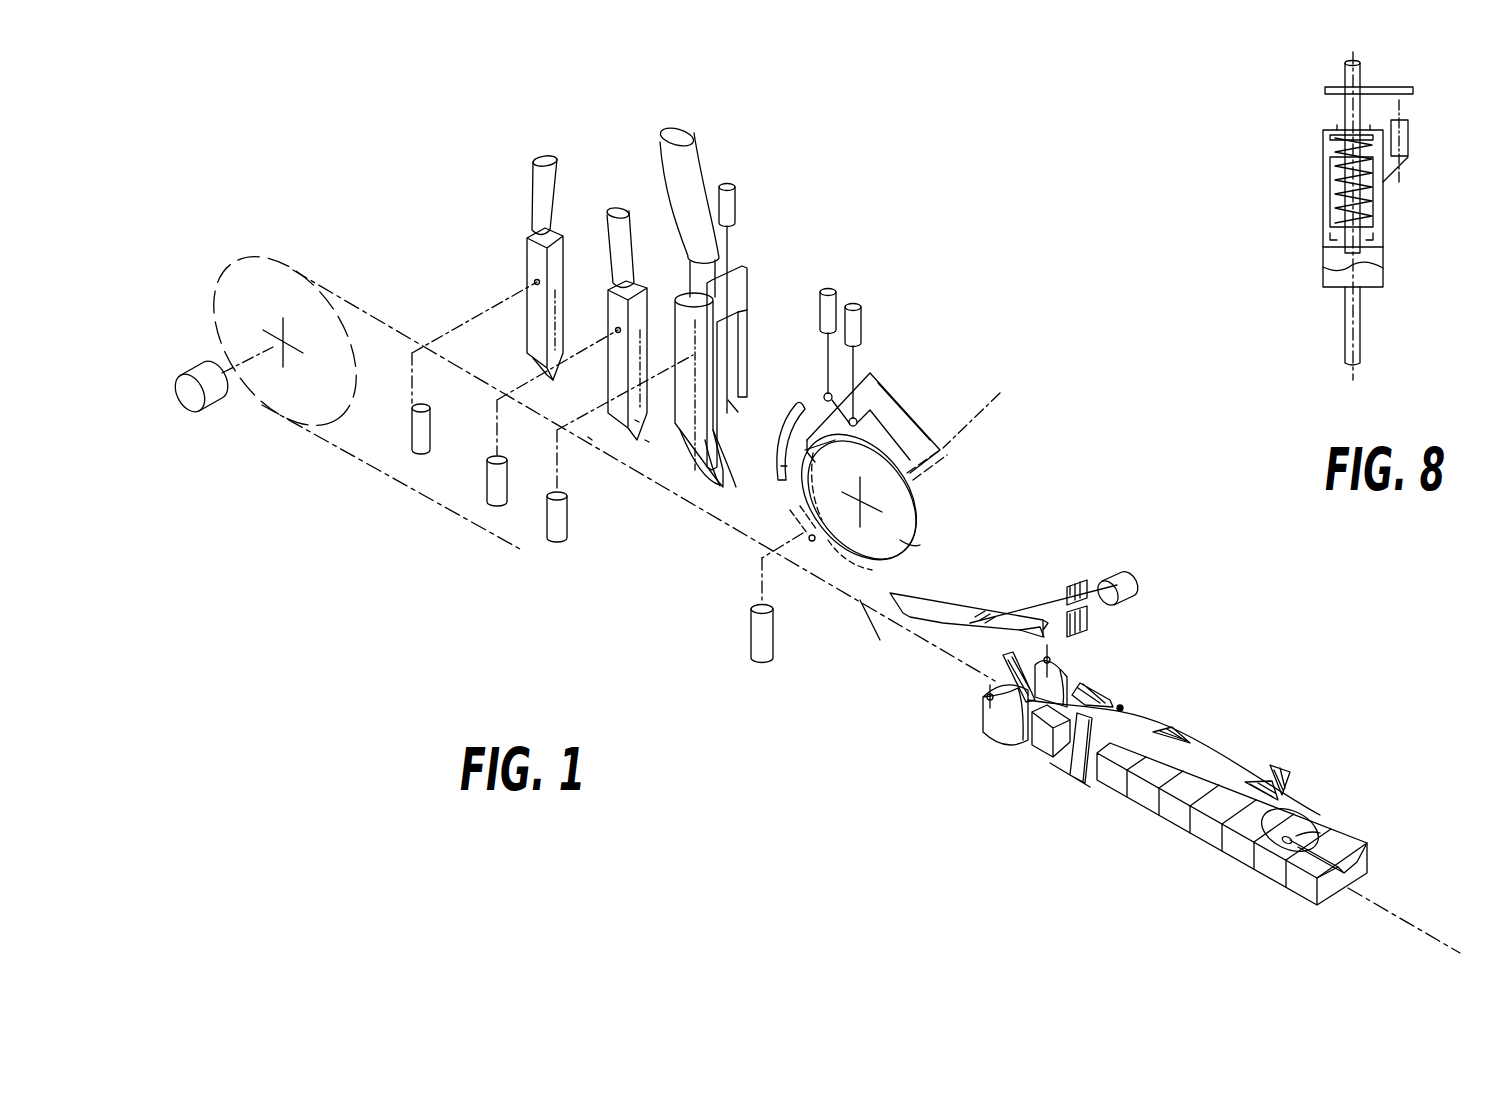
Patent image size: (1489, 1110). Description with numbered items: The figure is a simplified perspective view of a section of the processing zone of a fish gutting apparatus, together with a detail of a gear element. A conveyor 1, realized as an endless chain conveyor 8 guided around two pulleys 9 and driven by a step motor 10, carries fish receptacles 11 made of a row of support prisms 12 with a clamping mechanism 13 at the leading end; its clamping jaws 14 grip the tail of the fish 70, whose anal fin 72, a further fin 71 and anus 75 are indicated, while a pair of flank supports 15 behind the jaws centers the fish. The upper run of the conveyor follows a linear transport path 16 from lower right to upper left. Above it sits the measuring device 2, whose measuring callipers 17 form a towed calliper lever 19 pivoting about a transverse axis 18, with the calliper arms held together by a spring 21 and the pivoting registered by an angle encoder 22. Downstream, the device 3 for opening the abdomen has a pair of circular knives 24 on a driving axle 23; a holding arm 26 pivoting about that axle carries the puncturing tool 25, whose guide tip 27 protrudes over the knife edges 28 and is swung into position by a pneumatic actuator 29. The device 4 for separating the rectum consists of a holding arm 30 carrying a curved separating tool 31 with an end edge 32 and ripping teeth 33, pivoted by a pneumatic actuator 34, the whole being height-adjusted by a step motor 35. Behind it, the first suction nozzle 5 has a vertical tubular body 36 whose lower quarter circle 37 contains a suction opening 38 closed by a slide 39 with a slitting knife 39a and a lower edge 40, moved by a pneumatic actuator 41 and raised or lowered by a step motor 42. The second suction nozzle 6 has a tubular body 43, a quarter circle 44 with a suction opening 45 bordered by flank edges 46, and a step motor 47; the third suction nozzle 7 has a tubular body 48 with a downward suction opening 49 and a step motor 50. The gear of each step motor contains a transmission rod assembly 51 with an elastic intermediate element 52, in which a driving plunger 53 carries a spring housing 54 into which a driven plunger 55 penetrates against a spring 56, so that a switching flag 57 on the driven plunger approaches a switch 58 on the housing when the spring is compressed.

In FIG. 1, the conveyor 1 is at (251, 425).
In FIG. 1, the measuring device 2 is at (1000, 576).
In FIG. 1, the device for opening the abdomen 3 is at (930, 490).
In FIG. 1, the device for separating the rectum 4 is at (801, 372).
In FIG. 1, the first suction nozzle 5 is at (727, 351).
In FIG. 1, the second suction nozzle 6 is at (608, 298).
In FIG. 1, the third suction nozzle 7 is at (529, 273).
In FIG. 1, the endless chain conveyor 8 is at (405, 505).
In FIG. 1, the pulleys 9 is at (247, 290).
In FIG. 1, the step motor 10 is at (195, 403).
In FIG. 1, the fish receptacles 11 is at (1213, 824).
In FIG. 1, the support prisms 12 is at (1237, 850).
In FIG. 1, the clamping mechanism 13 is at (1006, 757).
In FIG. 1, the clamping jaws 14 is at (1000, 728).
In FIG. 1, the flank supports 15 is at (1077, 770).
In FIG. 1, the linear transport path 16 is at (870, 622).
In FIG. 1, the measuring callipers 17 is at (975, 636).
In FIG. 1, the transverse axis 18 is at (1086, 588).
In FIG. 1, the calliper lever 19 is at (925, 612).
In FIG. 1, the spring 21 is at (1000, 617).
In FIG. 1, the angle encoder 22 is at (1130, 585).
In FIG. 1, the driving axle 23 is at (986, 406).
In FIG. 1, the circular knives 24 is at (918, 543).
In FIG. 1, the puncturing tool 25 is at (810, 445).
In FIG. 1, the guide tip 27 is at (803, 535).
In FIG. 1, the holding arm 26 is at (926, 442).
In FIG. 1, the edges 28 is at (900, 397).
In FIG. 1, the pneumatic actuator 29 is at (861, 326).
In FIG. 1, the holding arm 30 is at (880, 376).
In FIG. 1, the separating tool 31 is at (786, 418).
In FIG. 1, the edge 32 is at (827, 453).
In FIG. 1, the ripping teeth 33 is at (780, 466).
In FIG. 1, the pneumatic actuator 34 is at (836, 300).
In FIG. 1, the step motor 35 is at (756, 640).
In FIG. 1, the tool tip 36 is at (687, 417).
In FIG. 1, the quarter circle 37 is at (700, 447).
In FIG. 1, the suction opening 38 is at (740, 462).
In FIG. 1, the slide 39 is at (735, 283).
In FIG. 1, the slitting knife 39a is at (738, 363).
In FIG. 1, the edge 40 is at (737, 417).
In FIG. 1, the pneumatic actuator 41 is at (731, 196).
In FIG. 1, the step motor 42 is at (550, 518).
In FIG. 1, the tubular body 43 is at (615, 347).
In FIG. 1, the quarter circle 44 is at (592, 438).
In FIG. 1, the suction opening 45 is at (647, 442).
In FIG. 1, the tool tip 46 is at (637, 422).
In FIG. 1, the step motor 47 is at (493, 486).
In FIG. 1, the tubular body 48 is at (530, 283).
In FIG. 1, the suction opening 49 is at (547, 380).
In FIG. 1, the step motor 50 is at (418, 437).
In FIG. 8, the transmission rod assembly 51 is at (1293, 183).
In FIG. 8, the elastic intermediate element 52 is at (1403, 249).
In FIG. 8, the driving plunger 53 is at (1348, 313).
In FIG. 8, the spring housing 54 is at (1328, 250).
In FIG. 8, the driven plunger 55 is at (1348, 63).
In FIG. 8, the spring 56 is at (1335, 220).
In FIG. 8, the switching flag 57 is at (1392, 86).
In FIG. 8, the switch 58 is at (1408, 138).
In FIG. 1, the fish 70 is at (1268, 753).
In FIG. 1, the fin 71 is at (1003, 662).
In FIG. 1, the anal fin 72 is at (1100, 690).
In FIG. 1, the anus 75 is at (1143, 730).